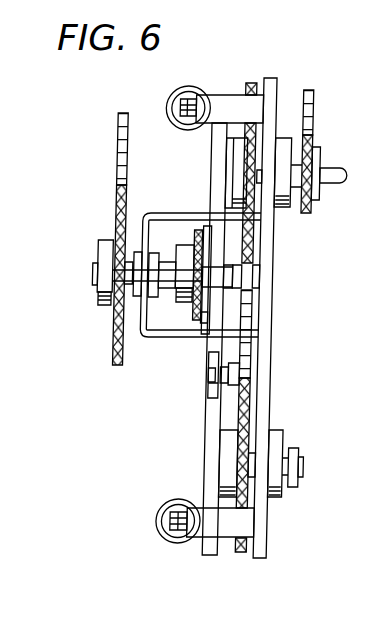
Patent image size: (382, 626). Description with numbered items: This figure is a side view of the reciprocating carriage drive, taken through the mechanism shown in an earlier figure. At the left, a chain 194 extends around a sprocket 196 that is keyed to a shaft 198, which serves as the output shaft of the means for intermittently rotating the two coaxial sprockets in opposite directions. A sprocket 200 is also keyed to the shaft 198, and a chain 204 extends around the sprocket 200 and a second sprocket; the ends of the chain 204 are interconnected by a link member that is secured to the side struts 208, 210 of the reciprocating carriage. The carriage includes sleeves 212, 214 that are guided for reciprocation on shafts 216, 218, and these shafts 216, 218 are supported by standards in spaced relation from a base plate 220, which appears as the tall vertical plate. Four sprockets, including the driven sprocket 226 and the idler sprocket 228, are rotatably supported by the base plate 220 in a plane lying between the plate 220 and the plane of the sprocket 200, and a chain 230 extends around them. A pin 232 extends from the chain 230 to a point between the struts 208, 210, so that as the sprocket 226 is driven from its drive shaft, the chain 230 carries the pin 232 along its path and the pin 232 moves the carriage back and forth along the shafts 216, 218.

The chain 194 is at (114, 152).
The sprocket 196 is at (114, 222).
The shaft 198 is at (93, 273).
The sprocket 200 is at (193, 308).
The chain 204 is at (196, 229).
The side strut 208 is at (210, 362).
The side strut 210 is at (210, 445).
The sleeve 212 is at (169, 91).
The sleeve 214 is at (163, 511).
The shaft 216 is at (183, 98).
The shaft 218 is at (186, 531).
The base plate 220 is at (273, 357).
The sprocket 226 is at (253, 83).
The idler sprocket 228 is at (243, 553).
The chain 230 is at (250, 310).
The pin 232 is at (334, 168).